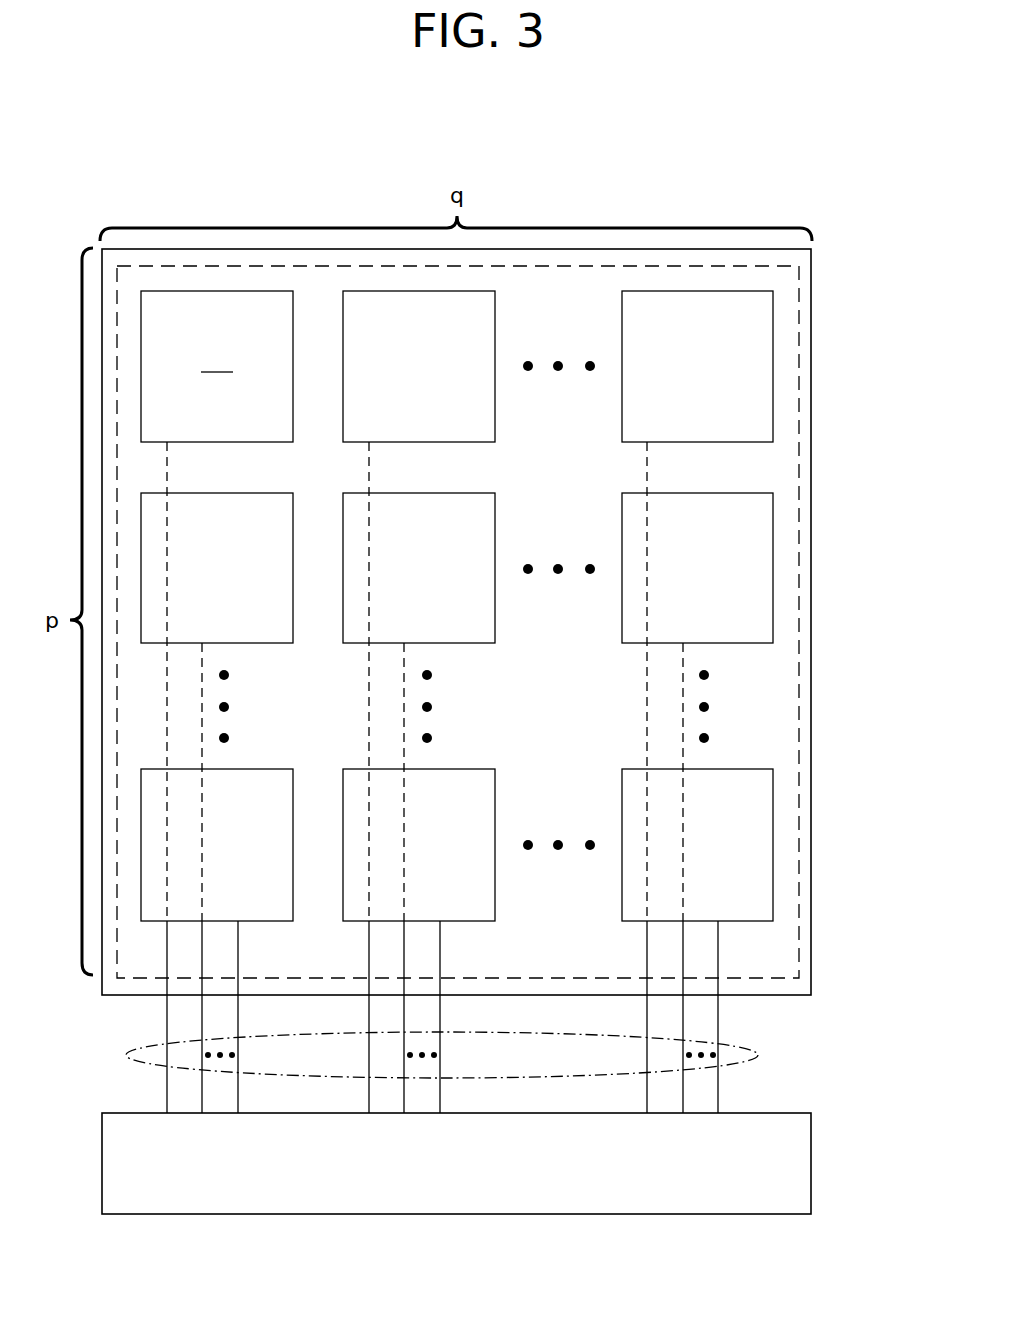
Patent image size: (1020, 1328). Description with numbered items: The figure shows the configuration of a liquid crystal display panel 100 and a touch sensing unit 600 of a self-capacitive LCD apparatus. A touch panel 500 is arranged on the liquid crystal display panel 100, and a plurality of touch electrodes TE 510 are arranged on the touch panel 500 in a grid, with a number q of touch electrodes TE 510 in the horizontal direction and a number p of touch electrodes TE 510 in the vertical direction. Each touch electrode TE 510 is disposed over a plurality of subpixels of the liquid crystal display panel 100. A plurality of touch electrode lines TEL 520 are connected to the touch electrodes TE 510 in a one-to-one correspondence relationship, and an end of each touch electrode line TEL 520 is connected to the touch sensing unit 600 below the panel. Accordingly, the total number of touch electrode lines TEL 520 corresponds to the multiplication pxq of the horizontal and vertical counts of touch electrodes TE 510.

The liquid crystal display panel 100 is at (812, 249).
The touch panel 500 is at (799, 362).
The touch electrode 510 is at (522, 606).
The touch electrode line 520 is at (683, 698).
The touch sensing unit 600 is at (437, 1172).
The touch electrode TE is at (217, 360).
The touch electrode line TEL is at (718, 1010).
The number of touch electrode lines pxq is at (466, 1055).